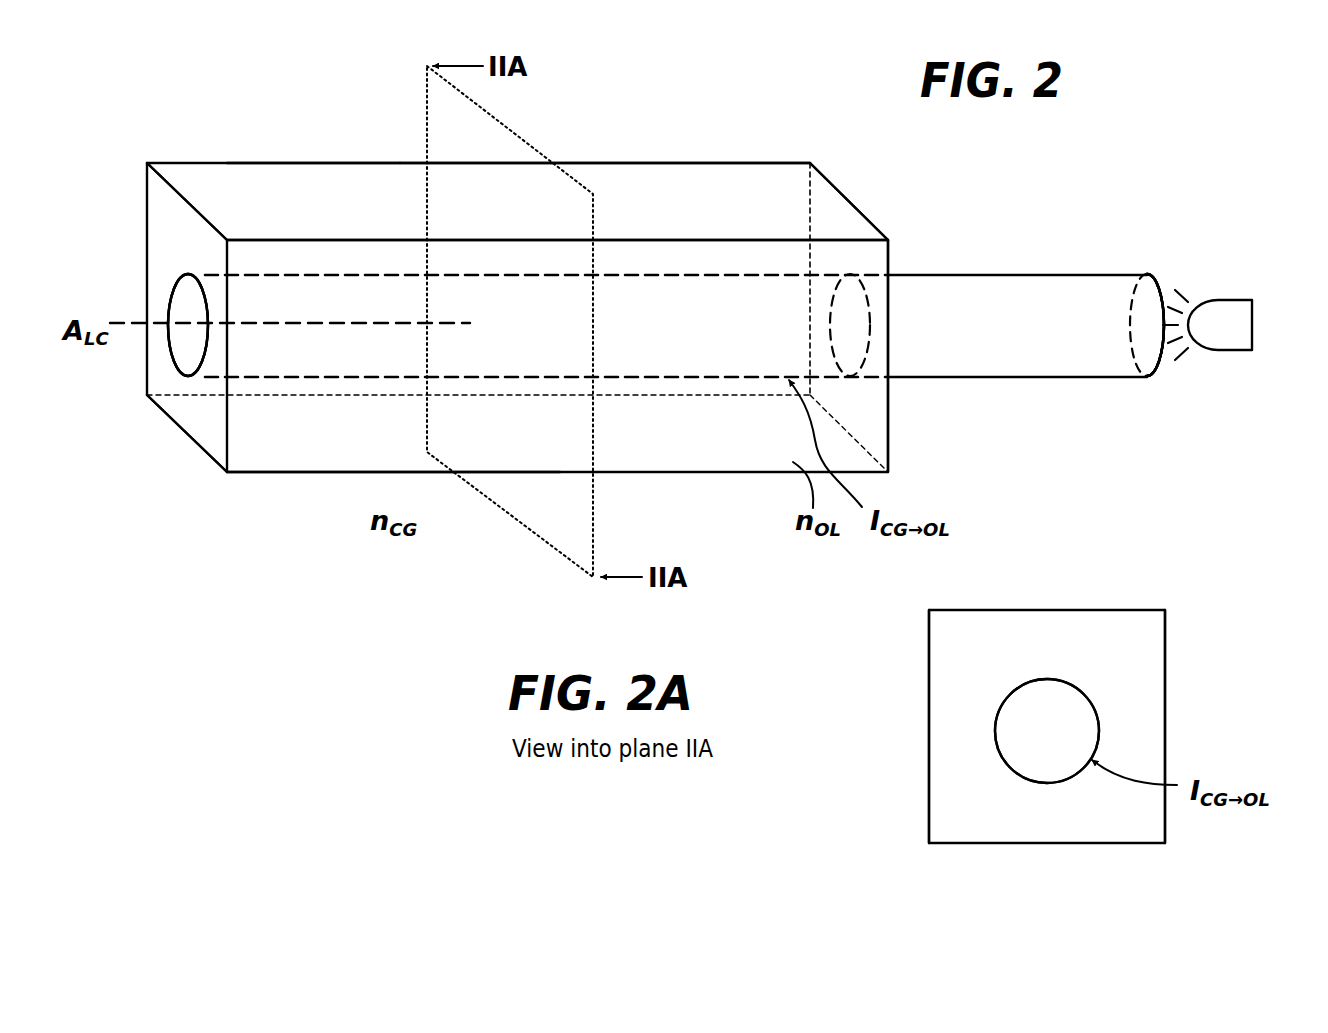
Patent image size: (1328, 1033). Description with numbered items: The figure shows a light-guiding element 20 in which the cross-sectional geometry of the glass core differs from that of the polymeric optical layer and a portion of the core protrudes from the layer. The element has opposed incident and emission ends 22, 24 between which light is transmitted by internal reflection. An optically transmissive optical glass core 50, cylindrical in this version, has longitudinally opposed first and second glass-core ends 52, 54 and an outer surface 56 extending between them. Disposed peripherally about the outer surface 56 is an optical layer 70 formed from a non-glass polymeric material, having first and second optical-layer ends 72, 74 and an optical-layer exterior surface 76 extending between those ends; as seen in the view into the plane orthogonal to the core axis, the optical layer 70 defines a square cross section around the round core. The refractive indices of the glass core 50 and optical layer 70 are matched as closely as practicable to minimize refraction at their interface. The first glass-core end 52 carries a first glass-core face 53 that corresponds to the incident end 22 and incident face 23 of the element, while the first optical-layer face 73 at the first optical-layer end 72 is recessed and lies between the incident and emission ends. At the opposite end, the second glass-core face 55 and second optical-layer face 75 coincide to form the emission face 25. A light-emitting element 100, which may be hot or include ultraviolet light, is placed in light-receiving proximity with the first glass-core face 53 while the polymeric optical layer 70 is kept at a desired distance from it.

In FIG. 2, the light-guiding element 20 is at (641, 121).
In FIG. 2A, the light-guiding element 20 is at (1200, 697).
In FIG. 2, the incident end 22 is at (1131, 392).
In FIG. 2, the incident face 23 is at (1149, 292).
In FIG. 2, the emission end 24 is at (252, 472).
In FIG. 2, the emission face 25 is at (192, 337).
In FIG. 2, the optical glass core 50 is at (625, 335).
In FIG. 2A, the optical glass core 50 is at (1027, 713).
In FIG. 2, the first glass-core end 52 is at (1115, 360).
In FIG. 2, the first glass-core face 53 is at (1158, 362).
In FIG. 2, the second glass-core end 54 is at (210, 283).
In FIG. 2, the second glass-core face 55 is at (178, 315).
In FIG. 2, the outer surface 56 is at (1018, 377).
In FIG. 2A, the outer surface 56 is at (993, 737).
In FIG. 2, the optical layer 70 is at (370, 202).
In FIG. 2A, the optical layer 70 is at (988, 643).
In FIG. 2, the first optical-layer end 72 is at (788, 163).
In FIG. 2, the first optical-layer face 73 is at (830, 205).
In FIG. 2, the second optical-layer end 74 is at (222, 208).
In FIG. 2, the second optical-layer face 75 is at (210, 432).
In FIG. 2, the optical-layer exterior surface 76 is at (310, 198).
In FIG. 2A, the optical-layer exterior surface 76 is at (928, 819).
In FIG. 2, the light-emitting element 100 is at (1217, 320).